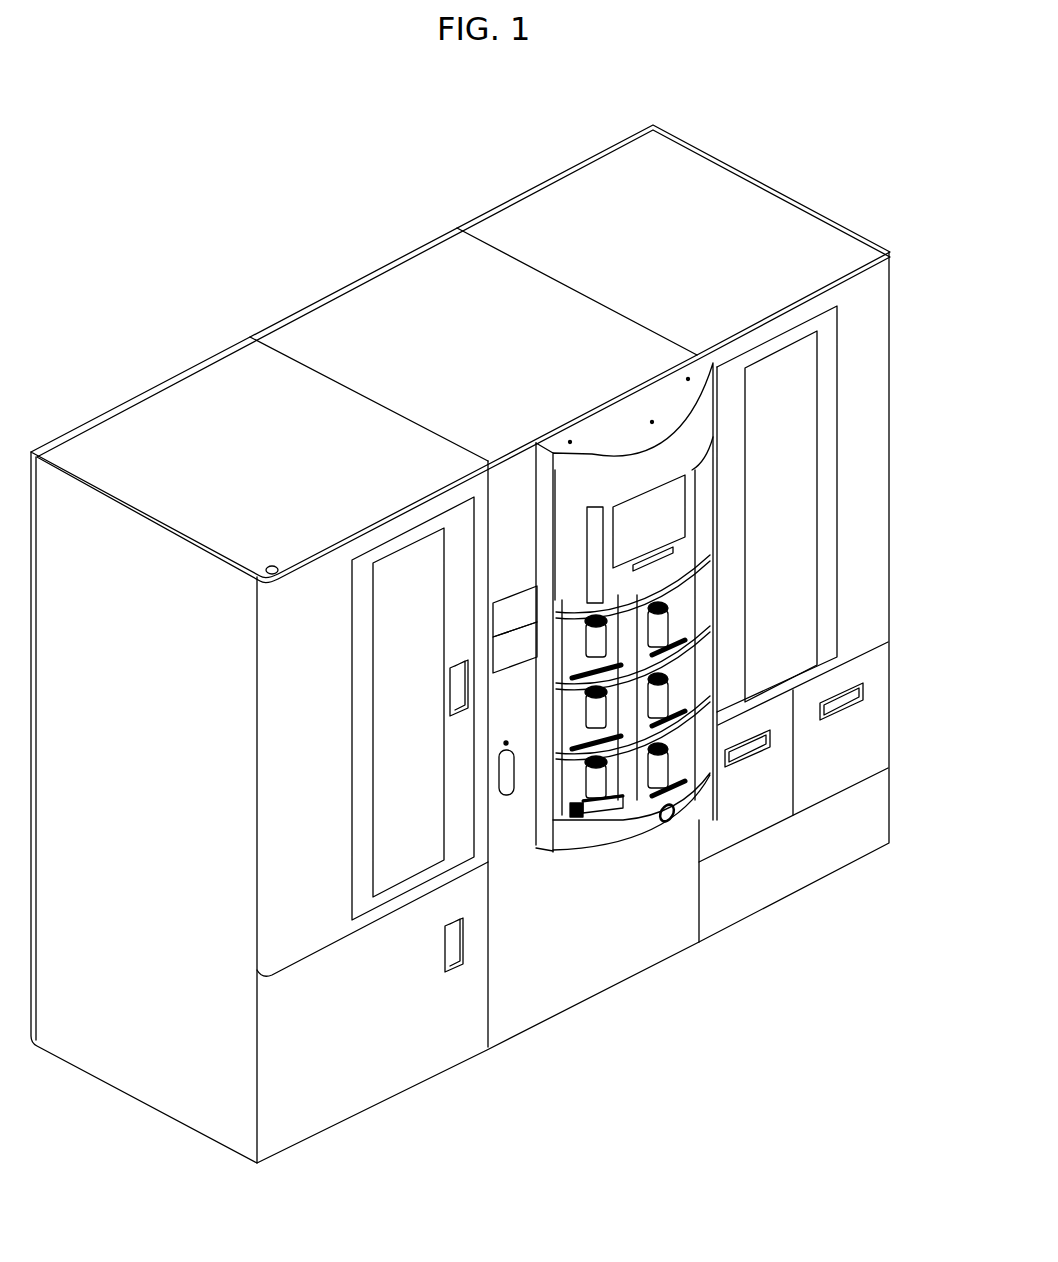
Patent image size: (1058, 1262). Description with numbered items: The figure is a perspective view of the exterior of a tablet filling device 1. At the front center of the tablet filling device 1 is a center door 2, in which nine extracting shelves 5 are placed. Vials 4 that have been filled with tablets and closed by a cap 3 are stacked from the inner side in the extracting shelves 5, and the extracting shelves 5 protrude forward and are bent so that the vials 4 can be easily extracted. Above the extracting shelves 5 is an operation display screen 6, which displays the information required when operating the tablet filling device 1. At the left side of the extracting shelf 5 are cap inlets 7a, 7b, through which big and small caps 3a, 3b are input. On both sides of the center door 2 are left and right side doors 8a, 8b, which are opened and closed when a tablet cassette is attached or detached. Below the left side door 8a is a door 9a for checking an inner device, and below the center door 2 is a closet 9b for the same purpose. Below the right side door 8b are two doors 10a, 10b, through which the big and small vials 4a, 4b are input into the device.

The tablet filling device 1 is at (150, 247).
The center door 2 is at (498, 845).
The cap 3 is at (690, 597).
The big cap 3a is at (565, 598).
The small cap 3b is at (580, 600).
The vial 4 is at (700, 614).
The big vial 4a is at (603, 818).
The small vial 4b is at (614, 815).
The extracting shelf 5 is at (688, 773).
The operation display screen 6 is at (673, 504).
The cap inlet 7a is at (511, 606).
The cap inlet 7b is at (517, 642).
The left side door 8a is at (325, 575).
The right side door 8b is at (870, 303).
The door 9a is at (390, 1093).
The closet 9b is at (605, 980).
The door 10a is at (747, 905).
The door 10b is at (835, 858).